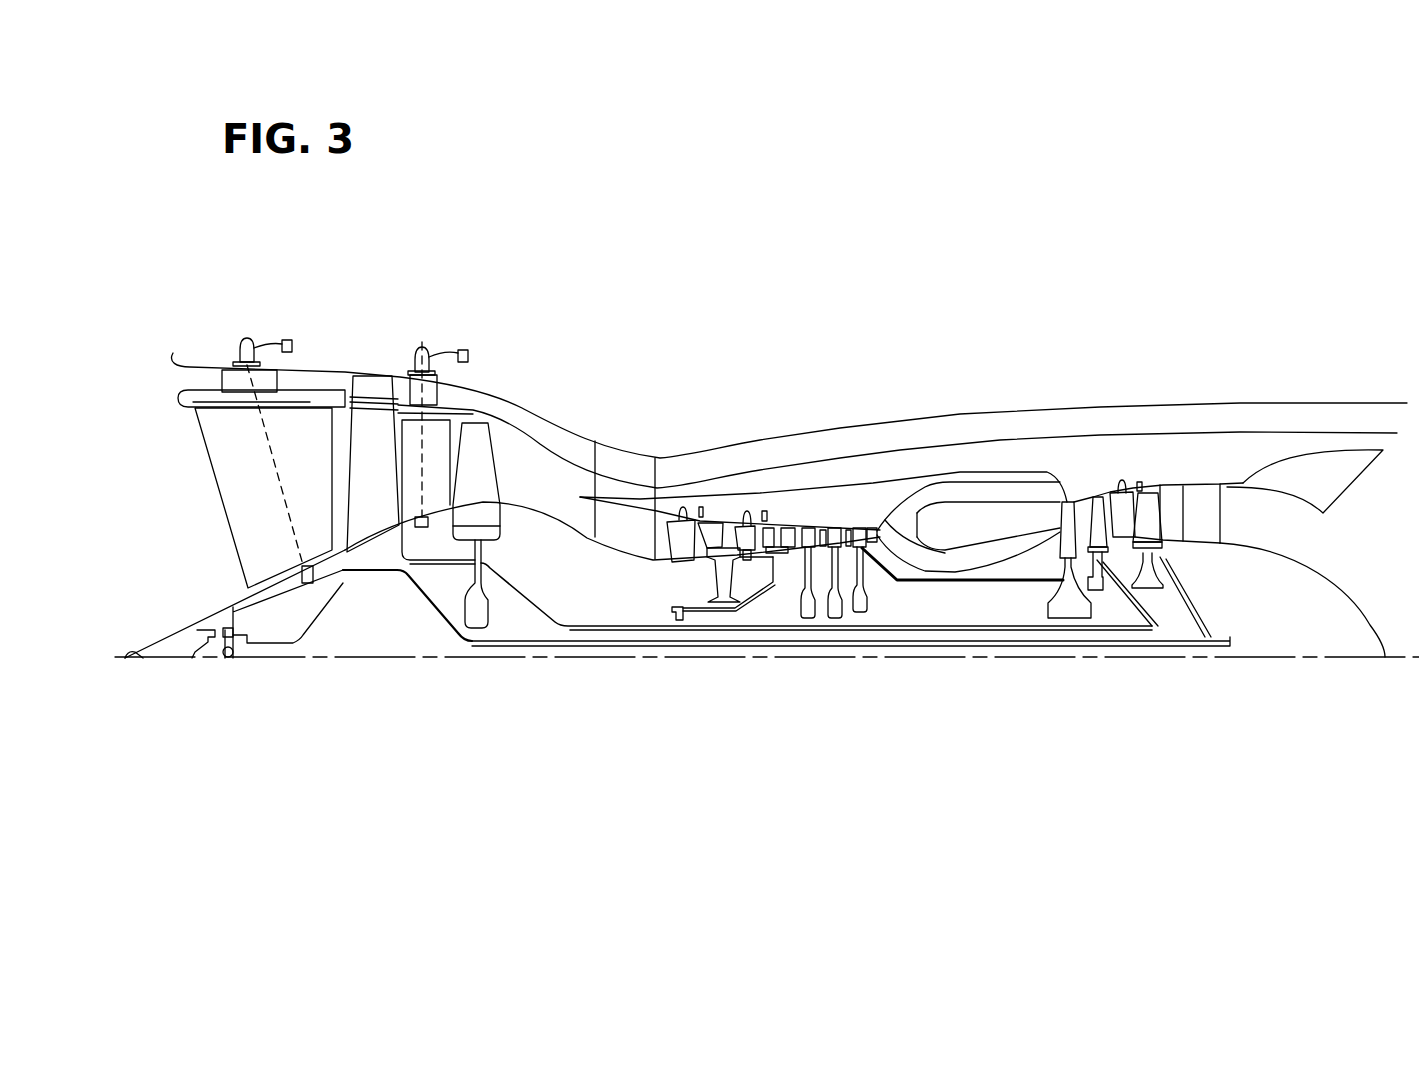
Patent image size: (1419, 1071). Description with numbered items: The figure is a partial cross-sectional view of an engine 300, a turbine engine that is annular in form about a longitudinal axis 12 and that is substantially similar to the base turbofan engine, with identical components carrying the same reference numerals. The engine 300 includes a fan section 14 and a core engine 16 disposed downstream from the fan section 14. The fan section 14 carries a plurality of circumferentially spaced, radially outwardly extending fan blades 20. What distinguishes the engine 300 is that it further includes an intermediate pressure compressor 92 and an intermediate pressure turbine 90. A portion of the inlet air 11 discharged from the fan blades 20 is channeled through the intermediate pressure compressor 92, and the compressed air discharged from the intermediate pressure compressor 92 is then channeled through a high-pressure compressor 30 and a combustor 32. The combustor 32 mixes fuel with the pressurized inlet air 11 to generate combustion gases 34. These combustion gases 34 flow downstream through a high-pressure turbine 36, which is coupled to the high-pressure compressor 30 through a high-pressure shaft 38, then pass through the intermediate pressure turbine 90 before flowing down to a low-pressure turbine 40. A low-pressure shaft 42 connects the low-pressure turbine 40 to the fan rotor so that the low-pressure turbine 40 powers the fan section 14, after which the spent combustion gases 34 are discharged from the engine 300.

The engine 300 is at (1033, 245).
The inlet air 11 is at (225, 548).
The longitudinal axis 12 is at (1233, 662).
The fan section 14 is at (182, 467).
The core engine 16 is at (958, 402).
The fan blades 20 is at (390, 507).
The high-pressure compressor 30 is at (820, 508).
The combustor 32 is at (957, 539).
The combustion gases 34 is at (1052, 518).
The high-pressure turbine 36 is at (1068, 502).
The high-pressure shaft 38 is at (963, 582).
The low-pressure turbine 40 is at (1150, 503).
The low-pressure shaft 42 is at (710, 645).
The intermediate pressure turbine 90 is at (1097, 497).
The intermediate pressure compressor 92 is at (490, 495).